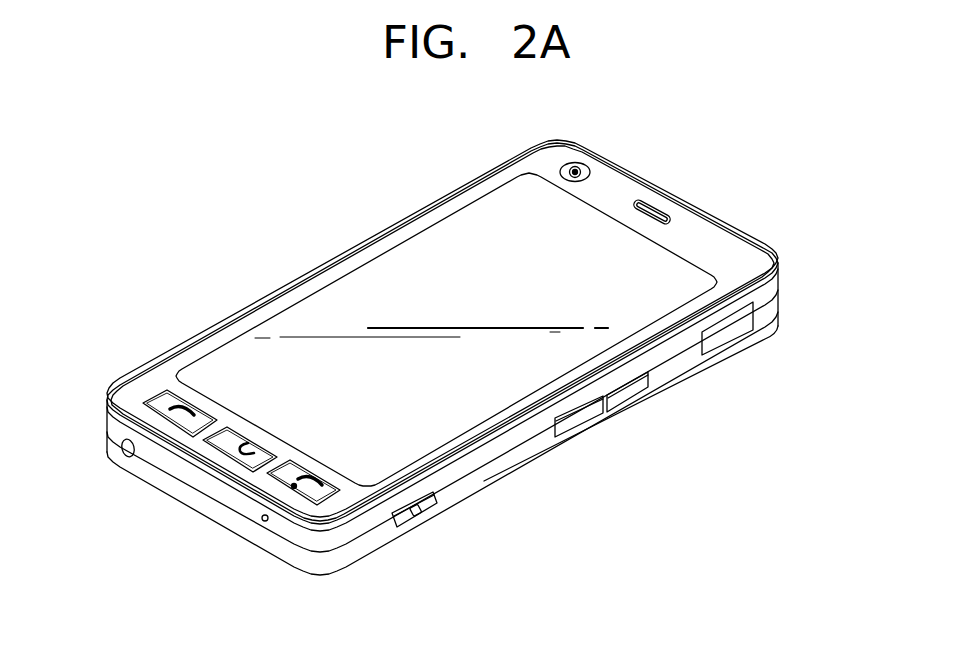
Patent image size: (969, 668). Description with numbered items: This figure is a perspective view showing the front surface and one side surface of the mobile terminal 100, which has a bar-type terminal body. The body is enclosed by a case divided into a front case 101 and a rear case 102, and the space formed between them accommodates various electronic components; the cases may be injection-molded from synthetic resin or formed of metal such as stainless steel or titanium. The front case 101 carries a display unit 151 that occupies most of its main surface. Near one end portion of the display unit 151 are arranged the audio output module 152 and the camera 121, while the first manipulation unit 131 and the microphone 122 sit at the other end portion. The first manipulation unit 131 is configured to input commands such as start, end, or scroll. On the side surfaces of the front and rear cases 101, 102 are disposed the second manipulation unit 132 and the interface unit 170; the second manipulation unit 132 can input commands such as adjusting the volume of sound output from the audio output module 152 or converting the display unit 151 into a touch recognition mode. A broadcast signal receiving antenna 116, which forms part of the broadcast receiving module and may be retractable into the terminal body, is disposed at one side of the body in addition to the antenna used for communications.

The mobile terminal 100 is at (398, 188).
The front case 101 is at (773, 290).
The rear case 102 is at (773, 312).
The broadcast signal receiving antenna 116 is at (127, 451).
The camera 121 is at (583, 168).
The microphone 122 is at (263, 520).
The first manipulation unit 131 is at (158, 400).
The second manipulation unit 132 is at (581, 421).
The display unit 151 is at (372, 264).
The audio output module 152 is at (655, 211).
The interface unit 170 is at (727, 330).